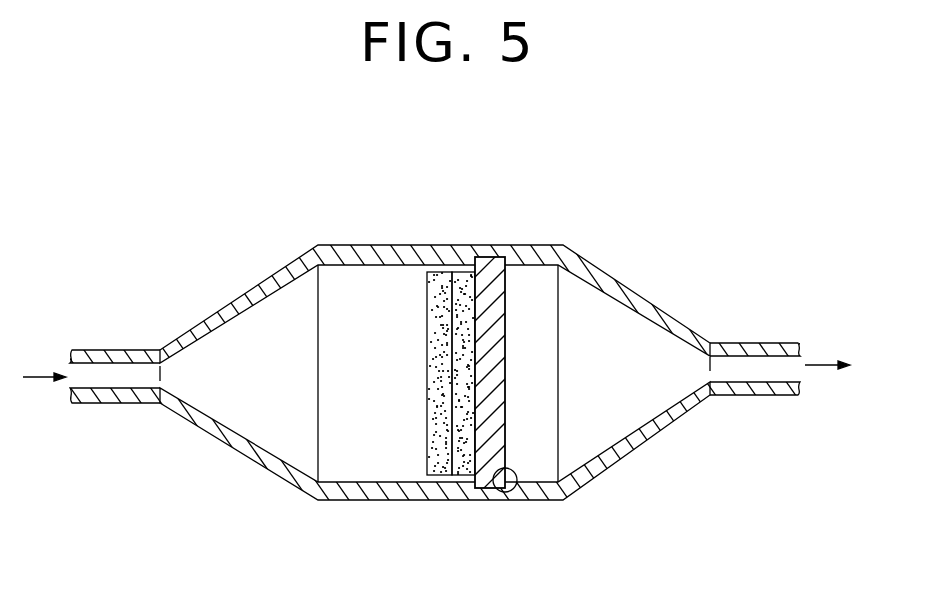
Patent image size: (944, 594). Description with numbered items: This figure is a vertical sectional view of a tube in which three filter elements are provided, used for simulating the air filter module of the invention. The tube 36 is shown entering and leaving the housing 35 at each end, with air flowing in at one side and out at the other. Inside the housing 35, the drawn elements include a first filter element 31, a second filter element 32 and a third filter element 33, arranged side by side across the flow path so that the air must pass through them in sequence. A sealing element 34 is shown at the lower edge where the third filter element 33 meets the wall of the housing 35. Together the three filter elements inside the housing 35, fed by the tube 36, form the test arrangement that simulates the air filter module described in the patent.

The first filter element 31 is at (437, 268).
The second filter element 32 is at (470, 274).
The support plate 33 is at (493, 262).
The seal ring 34 is at (512, 491).
The filter housing 35 is at (377, 492).
The air pipe 36 is at (35, 373).